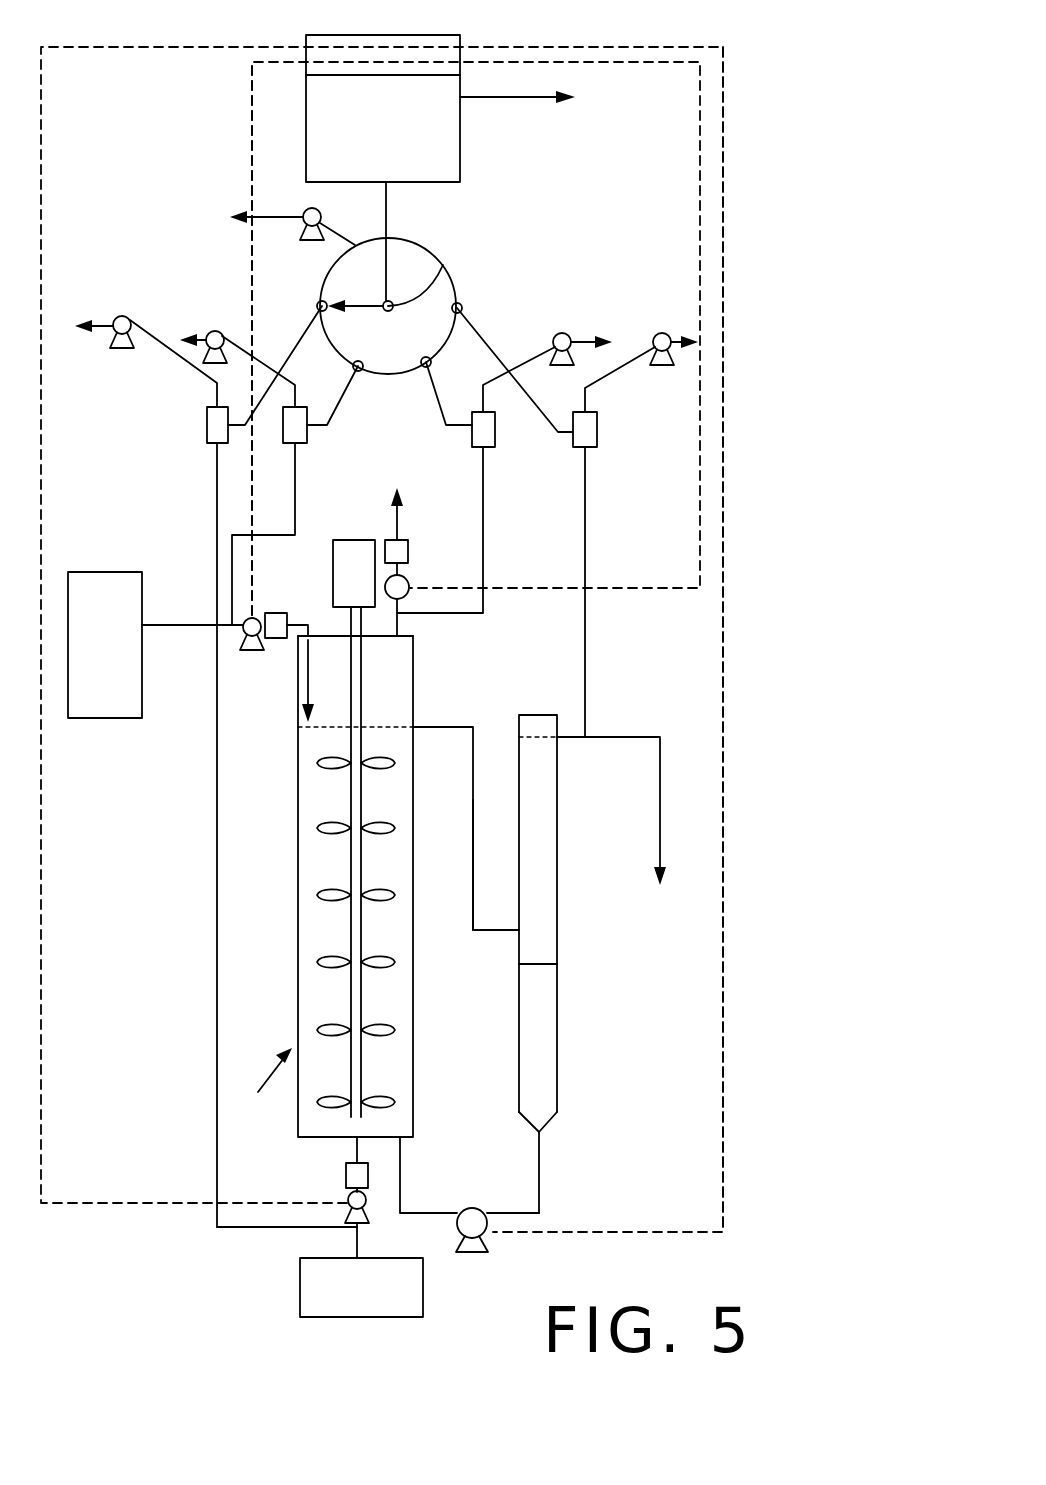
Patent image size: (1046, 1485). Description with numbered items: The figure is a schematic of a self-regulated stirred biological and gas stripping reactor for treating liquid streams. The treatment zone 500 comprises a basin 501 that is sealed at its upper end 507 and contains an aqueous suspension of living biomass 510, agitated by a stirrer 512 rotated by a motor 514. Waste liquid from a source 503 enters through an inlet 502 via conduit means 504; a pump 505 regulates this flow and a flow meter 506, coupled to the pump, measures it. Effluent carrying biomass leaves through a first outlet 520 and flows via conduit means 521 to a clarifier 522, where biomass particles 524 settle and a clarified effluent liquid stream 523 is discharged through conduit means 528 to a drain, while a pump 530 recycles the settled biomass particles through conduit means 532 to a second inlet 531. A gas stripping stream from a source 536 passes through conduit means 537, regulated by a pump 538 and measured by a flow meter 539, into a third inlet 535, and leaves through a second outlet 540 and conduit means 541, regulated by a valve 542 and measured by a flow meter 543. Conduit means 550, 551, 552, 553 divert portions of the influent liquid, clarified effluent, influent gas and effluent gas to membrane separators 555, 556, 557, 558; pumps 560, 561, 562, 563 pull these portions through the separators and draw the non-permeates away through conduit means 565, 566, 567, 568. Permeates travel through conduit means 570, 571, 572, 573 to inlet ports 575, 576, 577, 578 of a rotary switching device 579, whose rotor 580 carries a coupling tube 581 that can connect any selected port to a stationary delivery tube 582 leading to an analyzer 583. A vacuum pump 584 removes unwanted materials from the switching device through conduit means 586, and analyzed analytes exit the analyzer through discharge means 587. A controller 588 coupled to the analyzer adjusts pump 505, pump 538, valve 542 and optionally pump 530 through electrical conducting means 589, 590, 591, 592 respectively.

The treatment zone 500 is at (259, 1082).
The basin 501 is at (298, 940).
The inlet 502 is at (310, 633).
The source 503 is at (100, 577).
The conduit means 504 is at (170, 623).
The pump 505 is at (243, 650).
The flow meter 506 is at (280, 640).
The upper end 507 is at (328, 633).
The living biomass 510 is at (398, 985).
The stirrer 512 is at (357, 678).
The motor 514 is at (353, 555).
The first outlet 520 is at (413, 727).
The conduit means 521 is at (473, 817).
The clarifier 522 is at (557, 862).
The clarified effluent liquid stream 523 is at (548, 928).
The biomass particles 524 is at (550, 1035).
The conduit means 528 is at (628, 737).
The pump 530 is at (467, 1208).
The second inlet 531 is at (402, 1140).
The conduit means 532 is at (542, 1168).
The third inlet 535 is at (360, 1140).
The source 536 is at (305, 1285).
The conduit means 537 is at (357, 1244).
The pump 538 is at (350, 1198).
The flow meter 539 is at (345, 1177).
The second outlet 540 is at (397, 634).
The conduit means 541 is at (397, 527).
The valve 542 is at (410, 587).
The flow meter 543 is at (408, 555).
The conduit means 550 is at (295, 518).
The conduit means 551 is at (587, 500).
The conduit means 552 is at (215, 492).
The conduit means 553 is at (488, 506).
The membrane separator 555 is at (307, 438).
The membrane separator 556 is at (597, 430).
The membrane separator 557 is at (207, 422).
The membrane separator 558 is at (492, 432).
The pump 560 is at (205, 342).
The pump 561 is at (670, 338).
The pump 562 is at (122, 318).
The pump 563 is at (567, 338).
The conduit means 565 is at (247, 352).
The conduit means 566 is at (623, 367).
The conduit means 567 is at (177, 363).
The conduit means 568 is at (523, 353).
The conduit means 570 is at (336, 412).
The conduit means 571 is at (542, 418).
The conduit means 572 is at (293, 348).
The conduit means 573 is at (442, 412).
The inlet port 575 is at (362, 370).
The inlet port 576 is at (462, 307).
The inlet port 577 is at (432, 362).
The inlet port 578 is at (318, 304).
The rotary switching device 579 is at (462, 276).
The rotor 580 is at (443, 270).
The coupling tube 581 is at (357, 308).
The stationary delivery tube 582 is at (388, 258).
The analyzer 583 is at (308, 160).
The vacuum pump 584 is at (302, 212).
The conduit means 586 is at (350, 238).
The discharge means 587 is at (525, 97).
The controller 588 is at (345, 33).
The electrical conducting means 589 is at (250, 167).
The electrical conducting means 590 is at (42, 225).
The electrical conducting means 591 is at (700, 203).
The electrical conducting means 592 is at (725, 197).